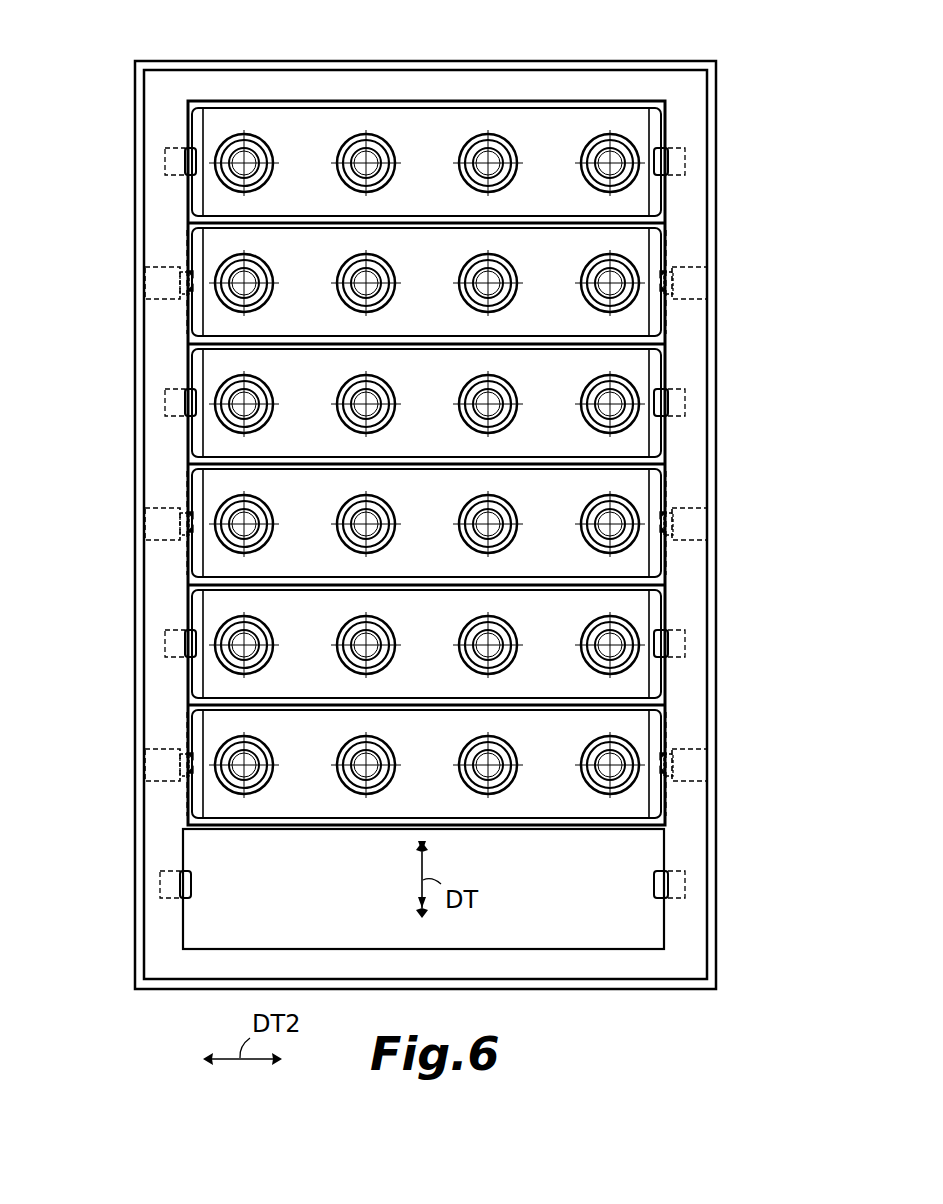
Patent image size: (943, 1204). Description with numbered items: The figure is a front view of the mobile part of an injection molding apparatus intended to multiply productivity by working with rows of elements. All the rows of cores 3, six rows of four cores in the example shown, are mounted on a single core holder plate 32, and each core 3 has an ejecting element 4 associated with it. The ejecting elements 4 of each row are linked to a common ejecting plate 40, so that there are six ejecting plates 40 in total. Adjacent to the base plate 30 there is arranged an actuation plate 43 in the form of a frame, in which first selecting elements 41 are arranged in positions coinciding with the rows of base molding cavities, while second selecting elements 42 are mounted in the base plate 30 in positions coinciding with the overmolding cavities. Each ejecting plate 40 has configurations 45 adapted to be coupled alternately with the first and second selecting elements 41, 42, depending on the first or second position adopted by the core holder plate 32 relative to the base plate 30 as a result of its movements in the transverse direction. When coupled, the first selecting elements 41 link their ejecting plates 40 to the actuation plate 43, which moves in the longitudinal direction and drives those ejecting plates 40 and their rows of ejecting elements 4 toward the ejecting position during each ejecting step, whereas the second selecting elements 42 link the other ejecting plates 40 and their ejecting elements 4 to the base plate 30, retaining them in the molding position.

The base plate 30 is at (138, 85).
The actuation plate 43 is at (500, 87).
The ejecting plate 40 is at (564, 749).
The configuration 45 is at (737, 131).
The second selecting element 42 is at (160, 185).
The first selecting element 41 is at (160, 304).
The core 3 is at (248, 749).
The ejecting element 4 is at (255, 789).
The core holder plate 32 is at (393, 824).